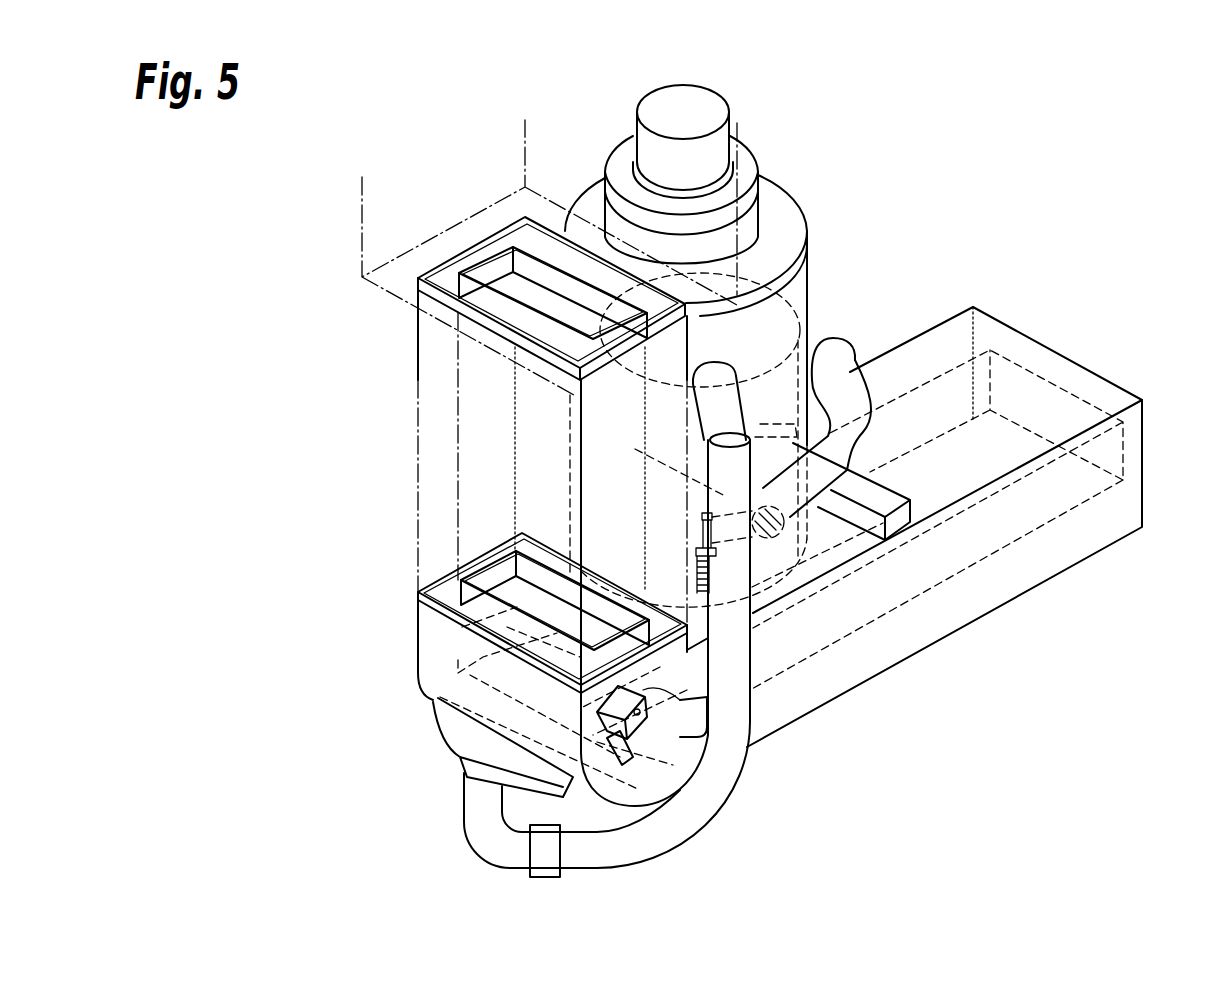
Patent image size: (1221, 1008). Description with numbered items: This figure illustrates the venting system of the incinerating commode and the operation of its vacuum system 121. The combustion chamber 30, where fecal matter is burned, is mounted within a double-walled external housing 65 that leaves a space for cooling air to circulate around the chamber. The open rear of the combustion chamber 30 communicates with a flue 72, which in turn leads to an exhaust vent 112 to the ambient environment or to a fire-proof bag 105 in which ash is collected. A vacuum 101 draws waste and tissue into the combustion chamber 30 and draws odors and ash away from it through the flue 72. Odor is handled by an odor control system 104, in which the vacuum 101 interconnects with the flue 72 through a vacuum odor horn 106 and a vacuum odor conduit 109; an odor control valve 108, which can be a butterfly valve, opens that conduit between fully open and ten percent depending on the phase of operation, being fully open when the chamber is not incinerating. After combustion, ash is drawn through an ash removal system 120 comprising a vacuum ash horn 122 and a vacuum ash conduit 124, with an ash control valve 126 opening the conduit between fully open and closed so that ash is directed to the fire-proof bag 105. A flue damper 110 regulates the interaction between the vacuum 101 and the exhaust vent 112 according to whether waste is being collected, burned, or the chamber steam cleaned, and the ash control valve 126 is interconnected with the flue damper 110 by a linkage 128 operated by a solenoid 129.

The combustion chamber 30 is at (1017, 390).
The external housing 65 is at (962, 600).
The flue 72 is at (502, 273).
The vacuum 101 is at (773, 180).
The odor control system 104 is at (843, 312).
The fire-proof bag 105 is at (797, 300).
The vacuum odor horn 106 is at (898, 488).
The odor control valve 108 is at (743, 437).
The vacuum odor conduit 109 is at (842, 357).
The flue damper 110 is at (480, 645).
The exhaust vent 112 is at (443, 277).
The ash removal system 120 is at (470, 847).
The vacuum system 121 is at (807, 250).
The vacuum ash horn 122 is at (460, 750).
The vacuum ash conduit 124 is at (653, 837).
The ash control valve 126 is at (674, 508).
The linkage 128 is at (700, 712).
The solenoid 129 is at (685, 693).